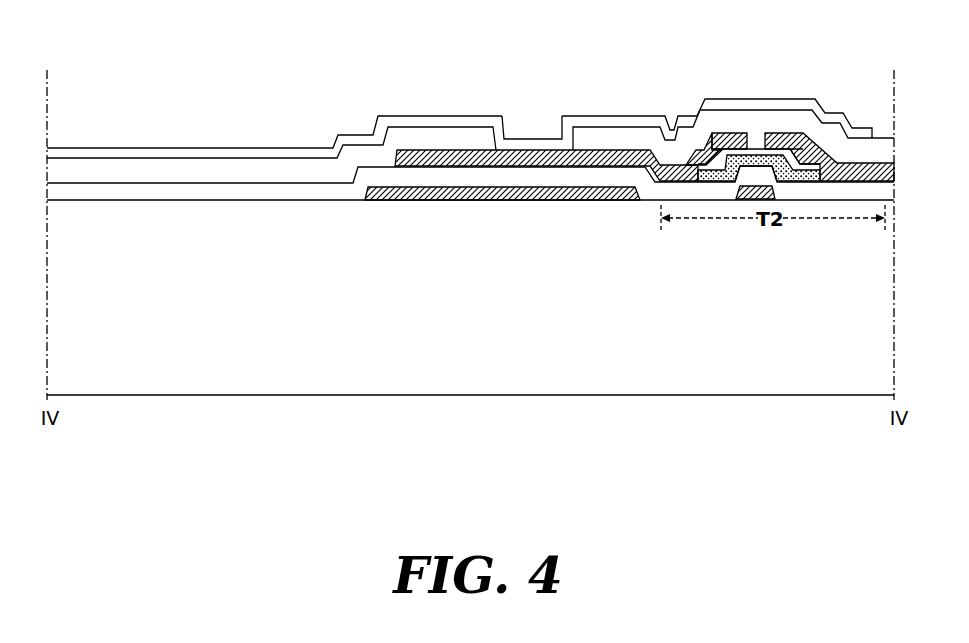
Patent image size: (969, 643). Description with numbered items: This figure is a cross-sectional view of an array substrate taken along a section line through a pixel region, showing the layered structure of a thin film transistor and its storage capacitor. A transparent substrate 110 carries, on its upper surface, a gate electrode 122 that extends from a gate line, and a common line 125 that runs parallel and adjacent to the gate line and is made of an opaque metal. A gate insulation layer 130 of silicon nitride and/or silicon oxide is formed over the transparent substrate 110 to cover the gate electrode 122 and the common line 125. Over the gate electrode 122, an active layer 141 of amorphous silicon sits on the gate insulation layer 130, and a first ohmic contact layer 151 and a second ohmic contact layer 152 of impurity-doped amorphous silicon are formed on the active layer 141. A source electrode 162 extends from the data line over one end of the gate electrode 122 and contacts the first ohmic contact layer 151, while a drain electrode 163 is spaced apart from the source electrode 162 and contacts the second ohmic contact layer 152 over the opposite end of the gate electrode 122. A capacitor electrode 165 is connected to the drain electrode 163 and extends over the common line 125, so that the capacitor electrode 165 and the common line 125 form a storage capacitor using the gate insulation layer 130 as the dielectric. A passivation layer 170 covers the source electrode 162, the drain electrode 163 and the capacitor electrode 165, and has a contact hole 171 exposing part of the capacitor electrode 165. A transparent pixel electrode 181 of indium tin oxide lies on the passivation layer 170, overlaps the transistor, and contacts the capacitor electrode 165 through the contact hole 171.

The transparent substrate 110 is at (537, 355).
The gate electrode 122 is at (752, 193).
The common line 125 is at (432, 200).
The gate insulation layer 130 is at (245, 195).
The active layer 141 is at (754, 157).
The first ohmic contact layer 151 is at (800, 133).
The second ohmic contact layer 152 is at (714, 143).
The source electrode 162 is at (788, 130).
The drain electrode 163 is at (728, 133).
The capacitor electrode 165 is at (578, 157).
The passivation layer 170 is at (299, 167).
The contact hole 171 is at (524, 120).
The pixel electrode 181 is at (425, 122).